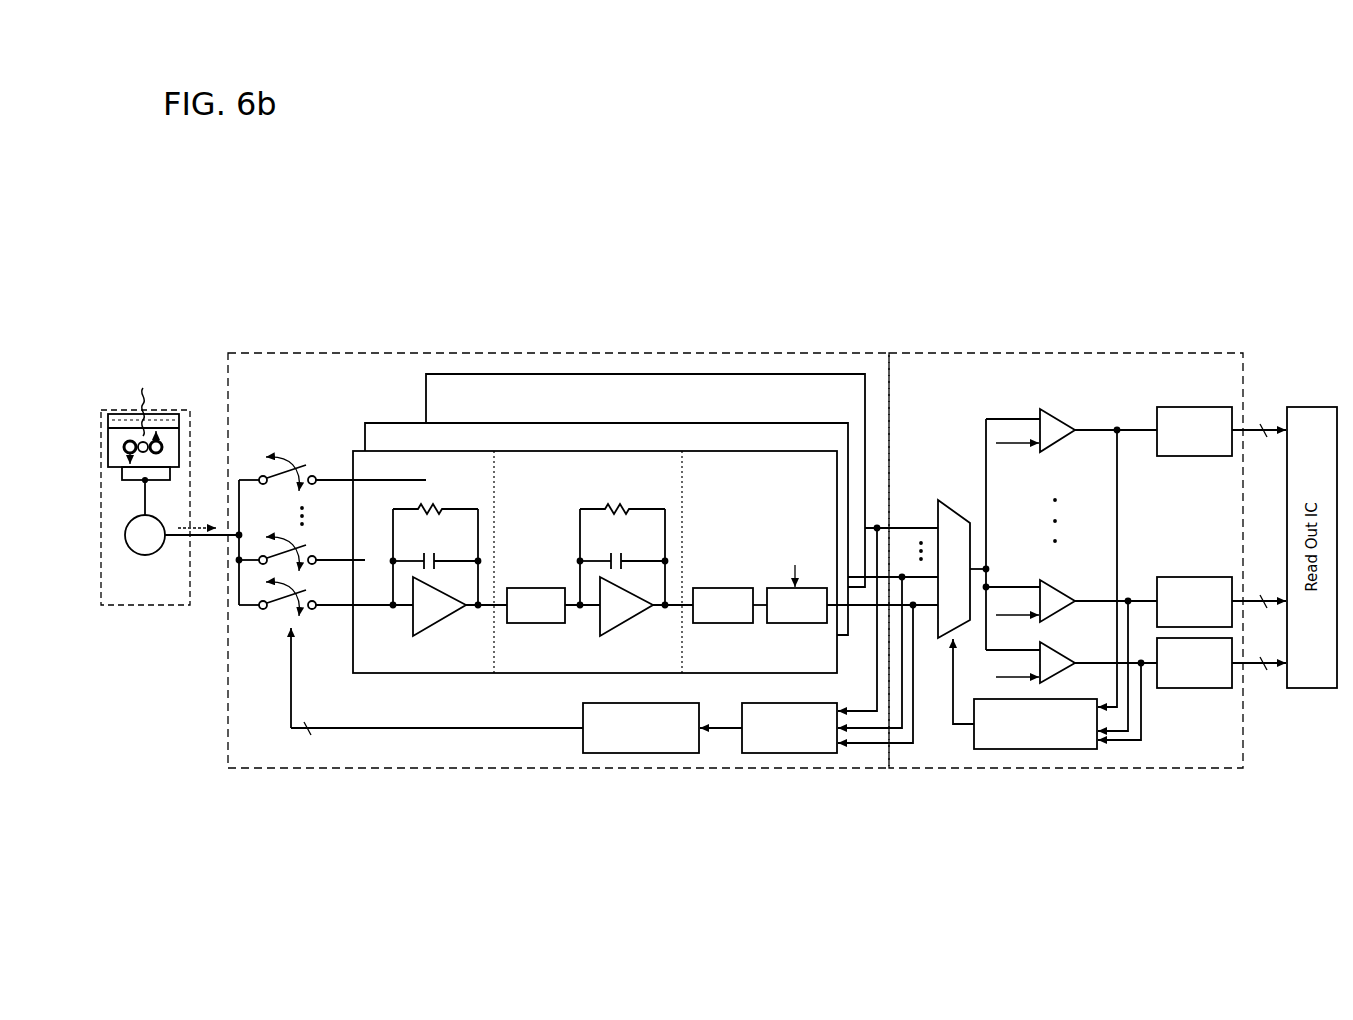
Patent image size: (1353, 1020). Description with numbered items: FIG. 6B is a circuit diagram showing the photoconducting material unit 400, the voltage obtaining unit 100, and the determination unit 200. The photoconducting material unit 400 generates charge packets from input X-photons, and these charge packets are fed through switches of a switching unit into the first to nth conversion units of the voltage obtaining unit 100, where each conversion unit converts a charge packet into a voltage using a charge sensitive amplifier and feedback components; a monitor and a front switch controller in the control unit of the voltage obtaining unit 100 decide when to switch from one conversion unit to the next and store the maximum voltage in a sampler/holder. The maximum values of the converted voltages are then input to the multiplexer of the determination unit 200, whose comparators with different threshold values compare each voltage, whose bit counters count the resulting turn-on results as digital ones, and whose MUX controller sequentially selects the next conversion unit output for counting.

The voltage obtaining unit 100 is at (633, 353).
The determination unit 200 is at (1027, 353).
The photoconducting material unit 400 is at (183, 409).